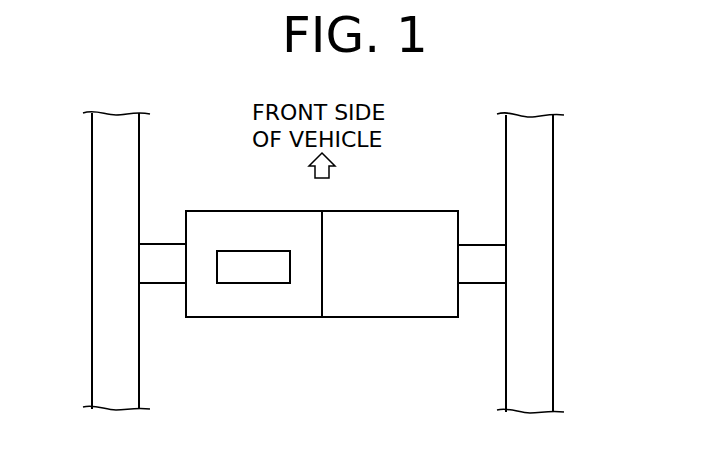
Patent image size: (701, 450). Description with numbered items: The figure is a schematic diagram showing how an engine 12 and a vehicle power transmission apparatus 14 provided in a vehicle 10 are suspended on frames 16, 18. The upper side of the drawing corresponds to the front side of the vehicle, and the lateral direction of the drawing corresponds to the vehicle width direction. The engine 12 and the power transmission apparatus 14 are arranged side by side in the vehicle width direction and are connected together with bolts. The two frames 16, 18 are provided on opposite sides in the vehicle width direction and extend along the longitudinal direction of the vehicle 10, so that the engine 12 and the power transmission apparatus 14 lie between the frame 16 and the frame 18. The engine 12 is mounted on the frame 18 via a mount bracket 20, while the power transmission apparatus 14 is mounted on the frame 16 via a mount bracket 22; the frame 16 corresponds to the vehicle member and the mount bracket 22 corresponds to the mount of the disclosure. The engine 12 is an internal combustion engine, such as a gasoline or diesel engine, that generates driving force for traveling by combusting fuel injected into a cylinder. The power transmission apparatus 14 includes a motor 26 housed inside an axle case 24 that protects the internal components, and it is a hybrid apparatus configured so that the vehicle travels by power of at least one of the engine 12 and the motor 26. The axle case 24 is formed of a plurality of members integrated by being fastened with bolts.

The vehicle 10 is at (448, 78).
The engine 12 is at (398, 198).
The power transmission apparatus 14 is at (254, 201).
The frame 16 is at (107, 203).
The frame 18 is at (535, 246).
The mount bracket 20 is at (479, 267).
The mount bracket 22 is at (160, 257).
The axle case 24 is at (227, 318).
The motor 26 is at (278, 272).